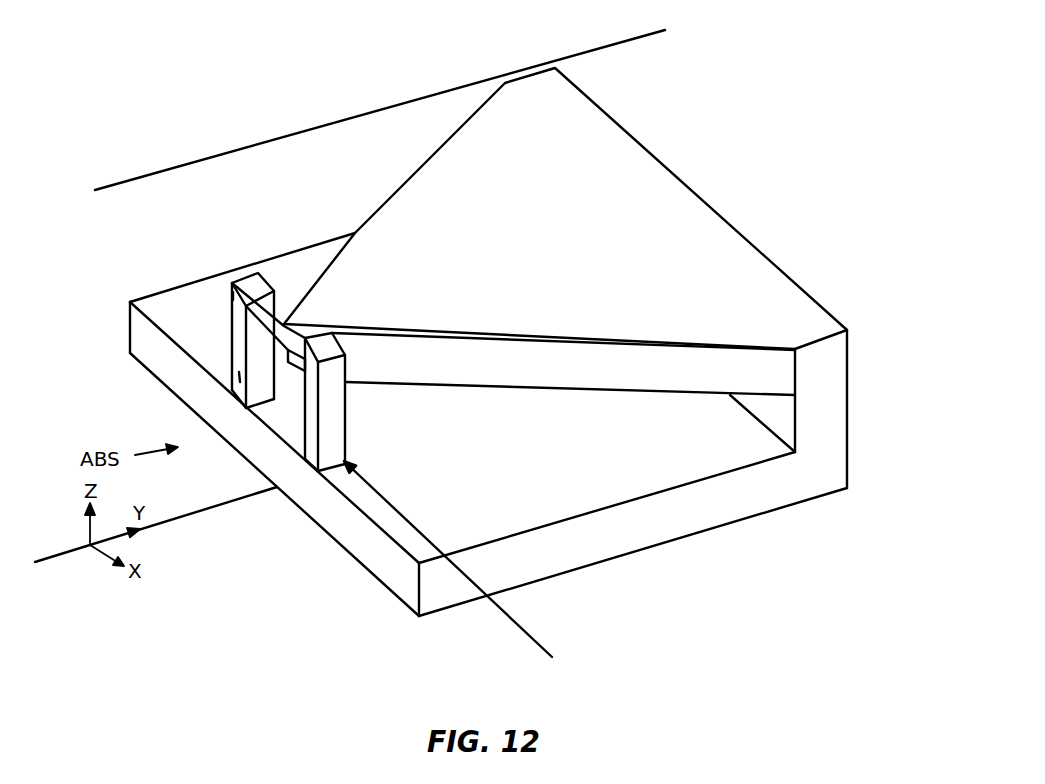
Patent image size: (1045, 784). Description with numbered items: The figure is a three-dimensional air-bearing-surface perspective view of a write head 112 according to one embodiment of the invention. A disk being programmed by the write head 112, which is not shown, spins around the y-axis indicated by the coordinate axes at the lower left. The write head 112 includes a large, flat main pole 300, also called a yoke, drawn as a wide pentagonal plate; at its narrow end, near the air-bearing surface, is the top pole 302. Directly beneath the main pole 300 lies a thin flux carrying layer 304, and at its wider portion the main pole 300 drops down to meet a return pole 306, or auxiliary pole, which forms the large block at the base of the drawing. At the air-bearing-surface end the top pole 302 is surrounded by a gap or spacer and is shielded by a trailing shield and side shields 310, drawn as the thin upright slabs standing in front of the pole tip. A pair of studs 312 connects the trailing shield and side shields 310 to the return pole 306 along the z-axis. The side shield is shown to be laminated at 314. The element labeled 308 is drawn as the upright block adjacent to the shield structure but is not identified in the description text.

The write head 112 is at (652, 66).
The main pole 300 is at (692, 189).
The top pole 302 is at (277, 331).
The flux carrying layer 304 is at (783, 378).
The return pole 306 is at (648, 463).
The front shield block 308 is at (340, 463).
The trailing shield and side shields 310 is at (255, 288).
The studs 312 is at (238, 372).
The lamination of the side shield 314 is at (233, 292).